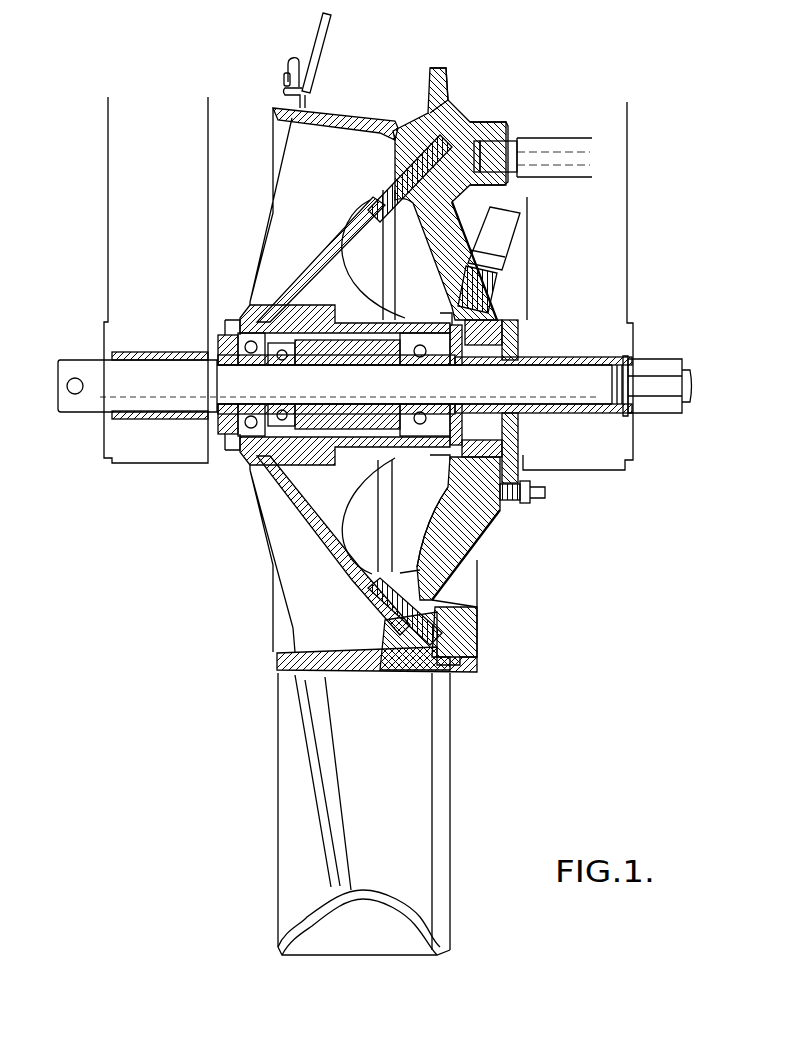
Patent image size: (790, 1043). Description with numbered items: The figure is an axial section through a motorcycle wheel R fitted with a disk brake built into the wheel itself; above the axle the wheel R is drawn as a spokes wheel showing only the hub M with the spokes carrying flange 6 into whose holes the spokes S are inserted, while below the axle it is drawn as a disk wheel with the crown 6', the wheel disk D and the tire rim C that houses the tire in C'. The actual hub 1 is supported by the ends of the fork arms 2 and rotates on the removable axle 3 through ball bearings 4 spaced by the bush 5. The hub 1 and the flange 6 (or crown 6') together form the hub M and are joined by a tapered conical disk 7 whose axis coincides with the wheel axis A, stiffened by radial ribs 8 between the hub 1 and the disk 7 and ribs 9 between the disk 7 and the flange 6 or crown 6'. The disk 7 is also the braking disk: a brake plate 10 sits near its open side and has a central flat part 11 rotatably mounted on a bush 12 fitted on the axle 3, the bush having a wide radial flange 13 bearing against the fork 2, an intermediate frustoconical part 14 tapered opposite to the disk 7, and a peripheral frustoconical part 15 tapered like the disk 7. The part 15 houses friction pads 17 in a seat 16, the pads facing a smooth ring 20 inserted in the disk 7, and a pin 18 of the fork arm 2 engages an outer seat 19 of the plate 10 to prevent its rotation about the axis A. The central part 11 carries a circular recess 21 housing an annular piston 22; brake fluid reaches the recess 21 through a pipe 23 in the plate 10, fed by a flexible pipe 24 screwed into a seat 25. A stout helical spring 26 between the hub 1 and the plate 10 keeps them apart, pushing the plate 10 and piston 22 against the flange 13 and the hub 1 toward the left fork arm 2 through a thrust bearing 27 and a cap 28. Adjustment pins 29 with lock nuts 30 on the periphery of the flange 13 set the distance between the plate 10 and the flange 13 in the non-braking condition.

The actual hub 1 is at (285, 450).
The fork arms 2 is at (108, 188).
The axle 3 is at (90, 412).
The ball bearings 4 is at (300, 335).
The bush 5 is at (335, 352).
The spokes carrying flange 6 is at (335, 106).
The crown 6' is at (377, 677).
The tapered conical disk 7 is at (312, 252).
The radial stiffening ribs 8 is at (333, 265).
The radial stiffening ribs 9 is at (300, 148).
The brake plate 10 is at (497, 525).
The central flat part 11 is at (450, 507).
The bush 12 is at (490, 366).
The radial flange 13 is at (520, 435).
The intermediate frustoconical part 14 is at (447, 218).
The peripheral frustoconical part 15 is at (455, 640).
The seat 16 is at (438, 610).
The friction pads 17 is at (385, 185).
The pin 18 is at (500, 145).
The outer seat 19 is at (487, 140).
The smooth ring 20 is at (410, 135).
The circular recess 21 is at (447, 328).
The annular piston 22 is at (480, 335).
The pipe 23 is at (452, 318).
The flexible pipe 24 is at (515, 218).
The seat 25 is at (495, 287).
The cylindrical helical spring 26 is at (433, 462).
The thrust bearing 27 is at (220, 452).
The cap 28 is at (213, 340).
The adjustment pins 29 is at (545, 495).
The lock nut 30 is at (527, 504).
The spokes S is at (320, 40).
The wheel axis A is at (156, 385).
The hub M is at (245, 216).
The wheel R is at (500, 757).
The wheel disk D is at (330, 790).
The tire rim C is at (359, 910).
The tire seat C' is at (341, 931).